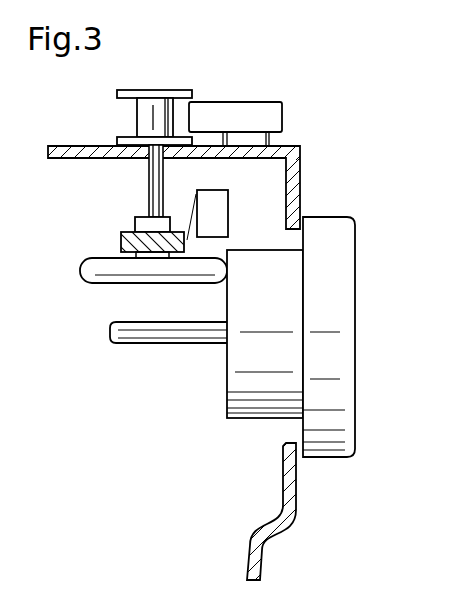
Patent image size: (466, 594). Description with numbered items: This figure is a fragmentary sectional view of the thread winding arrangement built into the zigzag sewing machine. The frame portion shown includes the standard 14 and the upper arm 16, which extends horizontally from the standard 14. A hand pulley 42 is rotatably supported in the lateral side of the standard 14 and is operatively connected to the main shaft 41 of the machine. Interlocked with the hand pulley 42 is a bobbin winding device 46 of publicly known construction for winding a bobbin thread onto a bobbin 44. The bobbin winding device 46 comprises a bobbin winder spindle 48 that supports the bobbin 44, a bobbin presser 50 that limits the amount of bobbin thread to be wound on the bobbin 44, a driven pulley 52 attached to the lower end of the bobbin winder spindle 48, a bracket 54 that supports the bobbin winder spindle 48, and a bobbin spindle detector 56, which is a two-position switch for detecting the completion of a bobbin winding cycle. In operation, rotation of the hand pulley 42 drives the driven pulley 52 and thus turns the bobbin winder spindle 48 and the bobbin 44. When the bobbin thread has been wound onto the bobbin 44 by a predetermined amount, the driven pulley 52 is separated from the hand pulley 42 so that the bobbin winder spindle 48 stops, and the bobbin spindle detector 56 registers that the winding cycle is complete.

The standard 14 is at (292, 507).
The upper arm 16 is at (75, 146).
The main shaft 41 is at (140, 335).
The hand pulley 42 is at (338, 333).
The bobbin 44 is at (131, 90).
The bobbin winding device 46 is at (141, 178).
The bobbin winder spindle 48 is at (153, 205).
The bobbin presser 50 is at (243, 102).
The driven pulley 52 is at (105, 273).
The bracket 54 is at (127, 237).
The bobbin spindle detector 56 is at (218, 218).